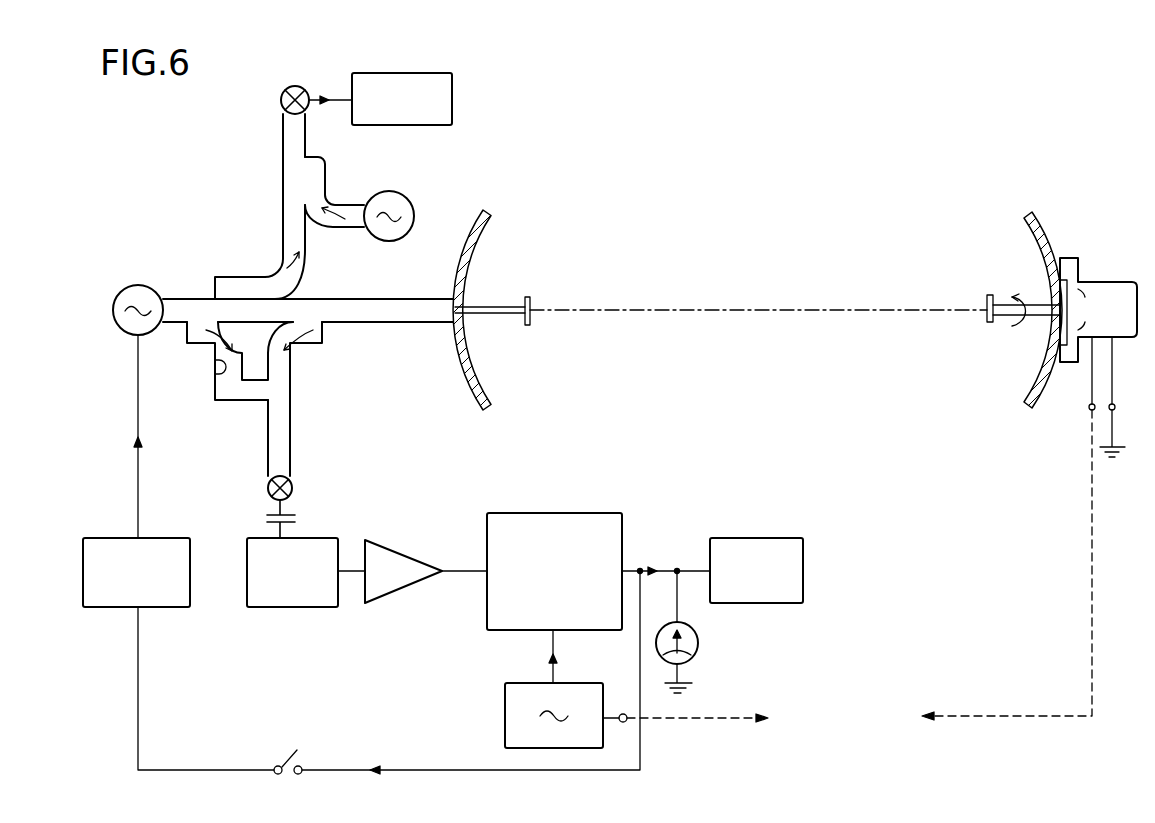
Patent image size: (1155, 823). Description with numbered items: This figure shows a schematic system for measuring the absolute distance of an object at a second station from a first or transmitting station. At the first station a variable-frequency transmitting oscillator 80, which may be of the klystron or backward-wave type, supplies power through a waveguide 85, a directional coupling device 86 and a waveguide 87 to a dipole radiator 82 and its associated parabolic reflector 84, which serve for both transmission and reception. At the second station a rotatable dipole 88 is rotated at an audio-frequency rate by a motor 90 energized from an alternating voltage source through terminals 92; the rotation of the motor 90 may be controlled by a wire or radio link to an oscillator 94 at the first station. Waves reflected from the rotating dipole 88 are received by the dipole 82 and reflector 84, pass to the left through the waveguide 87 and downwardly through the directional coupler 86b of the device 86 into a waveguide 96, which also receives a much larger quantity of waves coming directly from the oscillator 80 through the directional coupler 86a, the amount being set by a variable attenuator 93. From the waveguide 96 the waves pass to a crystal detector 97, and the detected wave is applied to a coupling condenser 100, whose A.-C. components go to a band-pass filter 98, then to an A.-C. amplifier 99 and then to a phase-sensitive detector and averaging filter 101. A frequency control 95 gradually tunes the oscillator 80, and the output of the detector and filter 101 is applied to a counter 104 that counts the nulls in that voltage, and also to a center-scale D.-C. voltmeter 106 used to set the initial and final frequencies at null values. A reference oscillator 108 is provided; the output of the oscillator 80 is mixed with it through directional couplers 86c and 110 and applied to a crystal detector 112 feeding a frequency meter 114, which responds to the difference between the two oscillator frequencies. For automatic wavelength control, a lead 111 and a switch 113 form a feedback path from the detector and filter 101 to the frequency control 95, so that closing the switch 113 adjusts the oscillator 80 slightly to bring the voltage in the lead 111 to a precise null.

The variable-frequency transmitting oscillator 80 is at (135, 287).
The dipole radiator 82 is at (531, 298).
The parabolic reflector 84 is at (484, 225).
The waveguide 85 is at (180, 297).
The directional coupling device 86 is at (300, 357).
The directional coupler 86a is at (200, 327).
The directional coupler 86b is at (320, 345).
The directional coupler 86c is at (240, 288).
The waveguide 87 is at (399, 298).
The rotatable dipole 88 is at (986, 297).
The motor 90 is at (1105, 282).
The terminals 92 is at (1110, 410).
The variable attenuator 93 is at (212, 375).
The oscillator 94 is at (505, 718).
The frequency control 95 is at (99, 538).
The waveguide 96 is at (285, 433).
The crystal detector 97 is at (268, 488).
The band-pass filter 98 is at (281, 607).
The A.-C. amplifier 99 is at (417, 557).
The coupling condenser 100 is at (291, 511).
The phase-sensitive detector and averaging filter 101 is at (486, 614).
The counter 104 is at (765, 550).
The D.-C. voltmeter 106 is at (699, 643).
The reference oscillator 108 is at (402, 203).
The directional coupler 110 is at (292, 127).
The lead 111 is at (643, 748).
The crystal detector 112 is at (298, 86).
The switch 113 is at (303, 748).
The frequency meter 114 is at (440, 73).